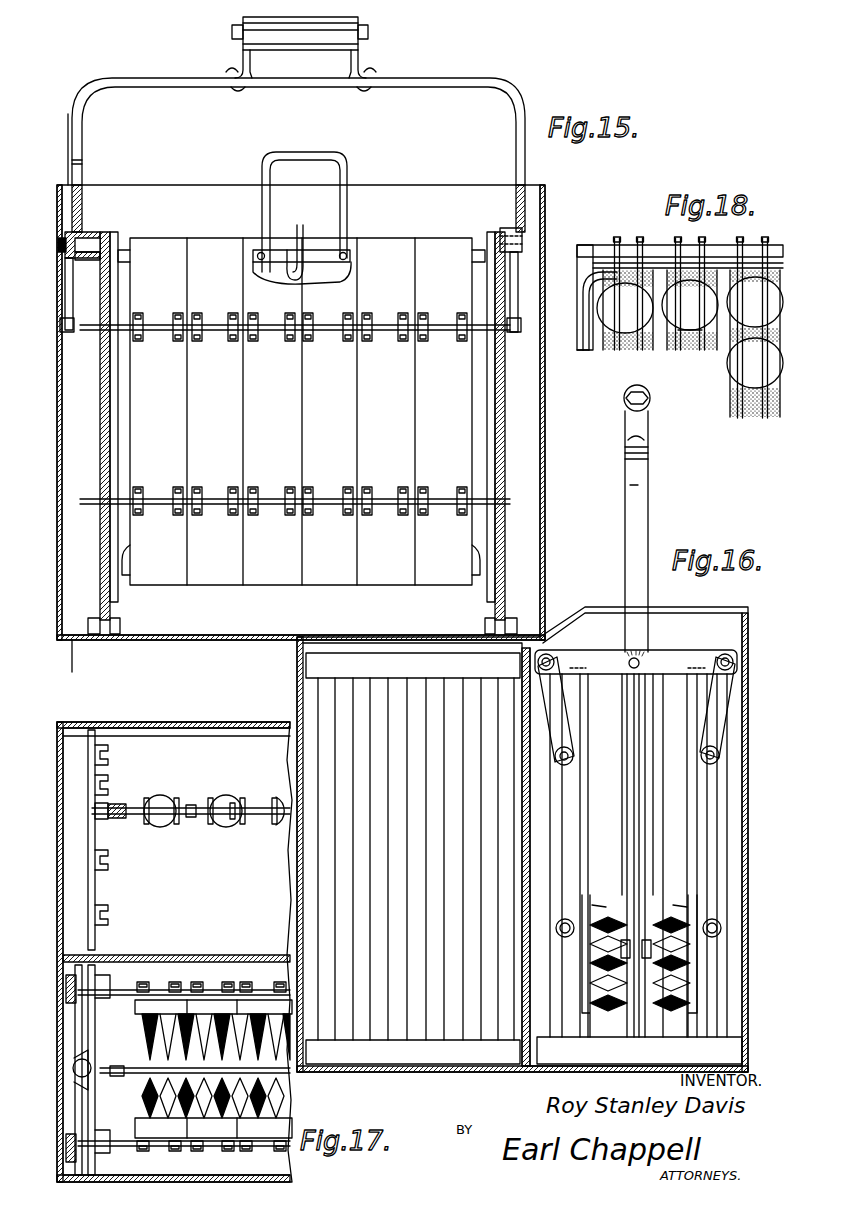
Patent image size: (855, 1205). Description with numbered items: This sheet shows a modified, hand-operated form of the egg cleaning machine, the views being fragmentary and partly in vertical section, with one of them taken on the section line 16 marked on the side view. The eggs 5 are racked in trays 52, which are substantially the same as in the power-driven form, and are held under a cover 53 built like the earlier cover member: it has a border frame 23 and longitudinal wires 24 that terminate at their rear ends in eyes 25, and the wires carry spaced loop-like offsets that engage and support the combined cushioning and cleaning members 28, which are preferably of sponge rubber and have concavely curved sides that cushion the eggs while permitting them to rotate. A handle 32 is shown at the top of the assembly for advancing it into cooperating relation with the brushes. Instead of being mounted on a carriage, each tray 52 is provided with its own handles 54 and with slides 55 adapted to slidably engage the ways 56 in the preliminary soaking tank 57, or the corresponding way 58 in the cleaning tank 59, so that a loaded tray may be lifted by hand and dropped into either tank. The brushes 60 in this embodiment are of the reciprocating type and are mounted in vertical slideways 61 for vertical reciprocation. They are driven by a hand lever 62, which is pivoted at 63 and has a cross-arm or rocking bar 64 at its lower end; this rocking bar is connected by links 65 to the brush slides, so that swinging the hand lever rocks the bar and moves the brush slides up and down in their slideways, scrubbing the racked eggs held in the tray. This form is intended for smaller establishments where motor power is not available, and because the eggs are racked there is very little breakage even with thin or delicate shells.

In FIG. 18, the ball 5 is at (728, 372).
In FIG. 17, the ball 5 is at (160, 797).
In FIG. 15, the section line 16 is at (67, 114).
In FIG. 18, the border frame 23 is at (586, 330).
In FIG. 18, the longitudinal wires 24 is at (680, 330).
In FIG. 17, the longitudinal wires 24 is at (233, 803).
In FIG. 18, the eyes 25 is at (640, 240).
In FIG. 18, the combined cushioning and cleaning members 28 is at (735, 400).
In FIG. 15, the handle 32 is at (241, 33).
In FIG. 17, the trays 52 is at (199, 818).
In FIG. 18, the cover 53 is at (586, 352).
In FIG. 17, the cover 53 is at (193, 805).
In FIG. 15, the handles 54 is at (312, 160).
In FIG. 17, the slides 55 is at (116, 804).
In FIG. 17, the ways 56 is at (102, 748).
In FIG. 16, the preliminary soaking tank 57 is at (418, 1042).
In FIG. 17, the preliminary soaking tank 57 is at (176, 736).
In FIG. 15, the way 58 is at (104, 375).
In FIG. 18, the way 58 is at (586, 296).
In FIG. 16, the way 58 is at (633, 790).
In FIG. 17, the way 58 is at (78, 1060).
In FIG. 15, the cleaning tank 59 is at (62, 478).
In FIG. 16, the cleaning tank 59 is at (742, 997).
In FIG. 17, the cleaning tank 59 is at (62, 1103).
In FIG. 15, the brushes 60 is at (200, 578).
In FIG. 16, the brushes 60 is at (688, 805).
In FIG. 17, the brushes 60 is at (158, 1002).
In FIG. 17, the vertical slideways 61 is at (108, 985).
In FIG. 15, the hand lever 62 is at (143, 80).
In FIG. 16, the hand lever 62 is at (650, 525).
In FIG. 17, the hand lever 62 is at (72, 1068).
In FIG. 15, the pivot 63 is at (88, 234).
In FIG. 16, the pivot 63 is at (630, 659).
In FIG. 17, the pivot 63 is at (88, 1085).
In FIG. 15, the cross-arm or rocking bar 64 is at (90, 262).
In FIG. 16, the cross-arm or rocking bar 64 is at (660, 656).
In FIG. 17, the cross-arm or rocking bar 64 is at (82, 1022).
In FIG. 15, the links 65 is at (66, 270).
In FIG. 16, the links 65 is at (553, 703).
In FIG. 17, the links 65 is at (66, 986).